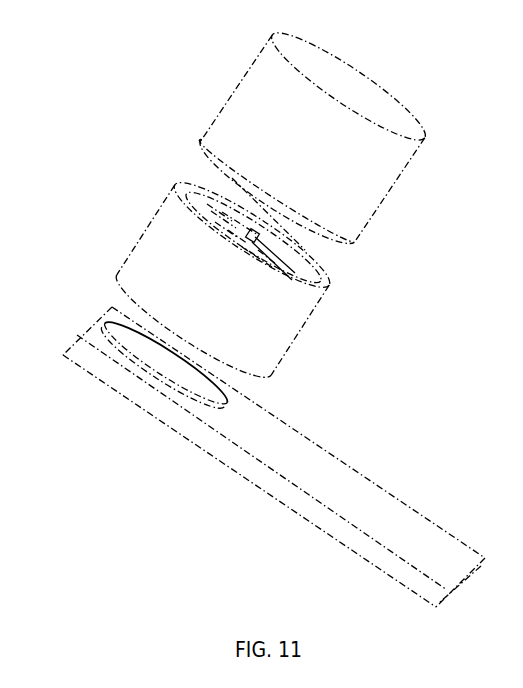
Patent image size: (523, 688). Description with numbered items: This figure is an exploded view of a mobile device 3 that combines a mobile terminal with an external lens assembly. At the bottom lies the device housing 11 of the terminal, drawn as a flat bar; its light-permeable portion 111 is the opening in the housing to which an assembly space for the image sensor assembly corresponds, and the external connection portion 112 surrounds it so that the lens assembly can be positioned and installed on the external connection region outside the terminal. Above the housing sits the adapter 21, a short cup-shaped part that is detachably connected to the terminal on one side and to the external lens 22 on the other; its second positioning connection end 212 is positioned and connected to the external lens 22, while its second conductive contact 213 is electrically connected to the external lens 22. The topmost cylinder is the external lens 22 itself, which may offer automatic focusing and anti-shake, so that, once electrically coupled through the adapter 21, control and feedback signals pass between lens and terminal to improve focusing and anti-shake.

The mobile device 3 is at (65, 61).
The device housing 11 is at (274, 457).
The light-permeable portion 111 is at (143, 347).
The external connection portion 112 is at (165, 378).
The adapter 21 is at (250, 237).
The second positioning connection end 212 is at (223, 212).
The second conductive contact 213 is at (282, 257).
The external lens 22 is at (362, 172).